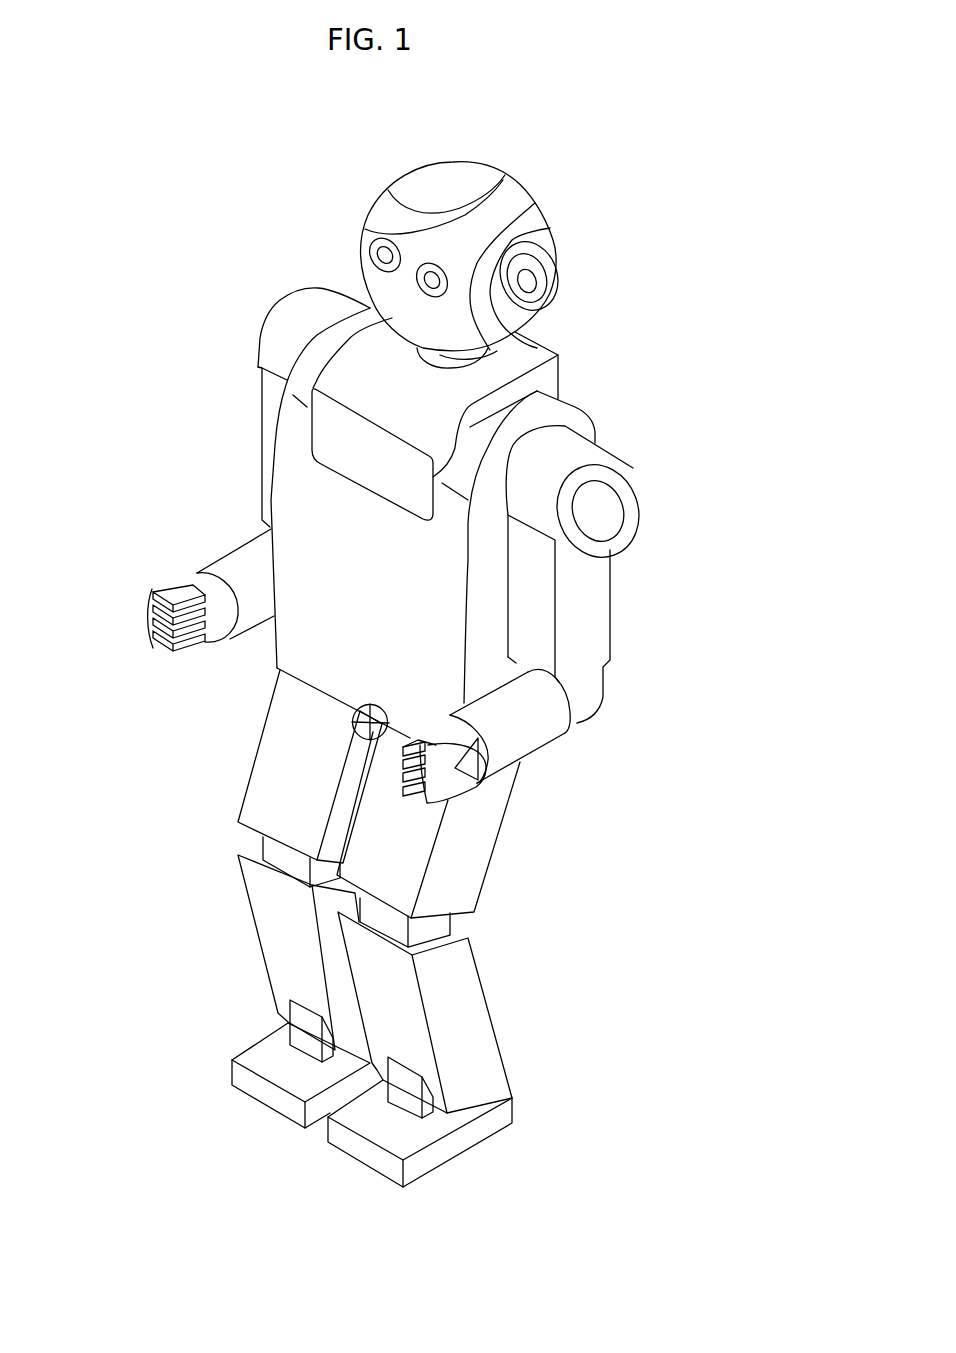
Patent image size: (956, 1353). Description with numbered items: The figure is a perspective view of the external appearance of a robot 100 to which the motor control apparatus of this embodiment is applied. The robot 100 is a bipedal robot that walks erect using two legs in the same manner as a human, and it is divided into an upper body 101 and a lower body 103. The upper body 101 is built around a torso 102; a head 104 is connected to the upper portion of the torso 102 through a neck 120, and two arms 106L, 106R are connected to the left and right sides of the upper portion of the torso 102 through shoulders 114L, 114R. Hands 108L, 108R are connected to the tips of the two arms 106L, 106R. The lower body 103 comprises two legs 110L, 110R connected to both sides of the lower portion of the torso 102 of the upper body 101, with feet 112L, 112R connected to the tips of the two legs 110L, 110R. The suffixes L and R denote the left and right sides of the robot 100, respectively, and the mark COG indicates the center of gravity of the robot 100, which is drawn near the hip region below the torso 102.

The robot 100 is at (362, 121).
The upper body 101 is at (166, 393).
The torso 102 is at (308, 502).
The lower body 103 is at (212, 840).
The head 104 is at (366, 228).
The neck 120 is at (483, 352).
The right shoulder 114R is at (282, 320).
The left shoulder 114L is at (594, 457).
The right arm 106R is at (217, 570).
The left arm 106L is at (587, 672).
The right hand 108R is at (152, 610).
The left hand 108L is at (447, 783).
The right leg 110R is at (267, 933).
The left leg 110L is at (478, 1008).
The right foot 112R is at (238, 1077).
The left foot 112L is at (455, 1143).
The center of gravity COG is at (352, 712).